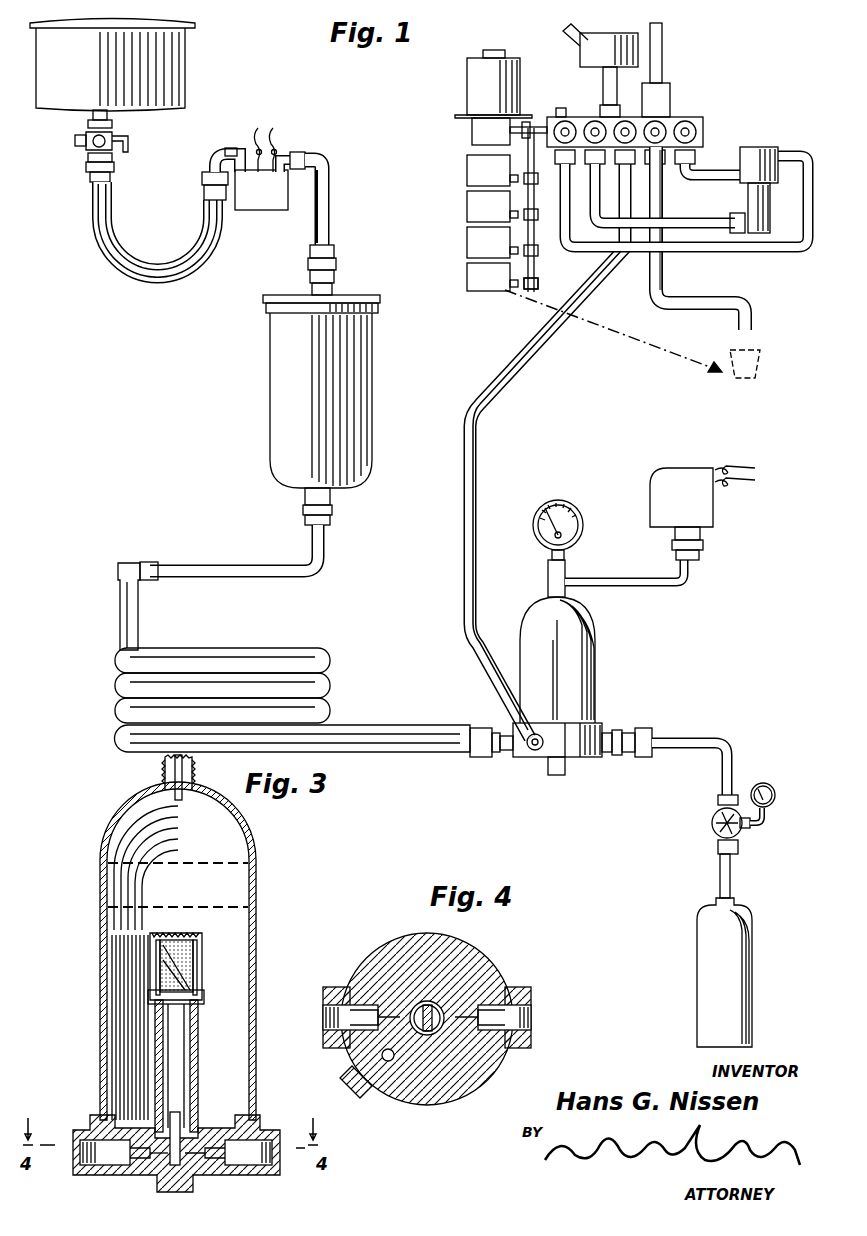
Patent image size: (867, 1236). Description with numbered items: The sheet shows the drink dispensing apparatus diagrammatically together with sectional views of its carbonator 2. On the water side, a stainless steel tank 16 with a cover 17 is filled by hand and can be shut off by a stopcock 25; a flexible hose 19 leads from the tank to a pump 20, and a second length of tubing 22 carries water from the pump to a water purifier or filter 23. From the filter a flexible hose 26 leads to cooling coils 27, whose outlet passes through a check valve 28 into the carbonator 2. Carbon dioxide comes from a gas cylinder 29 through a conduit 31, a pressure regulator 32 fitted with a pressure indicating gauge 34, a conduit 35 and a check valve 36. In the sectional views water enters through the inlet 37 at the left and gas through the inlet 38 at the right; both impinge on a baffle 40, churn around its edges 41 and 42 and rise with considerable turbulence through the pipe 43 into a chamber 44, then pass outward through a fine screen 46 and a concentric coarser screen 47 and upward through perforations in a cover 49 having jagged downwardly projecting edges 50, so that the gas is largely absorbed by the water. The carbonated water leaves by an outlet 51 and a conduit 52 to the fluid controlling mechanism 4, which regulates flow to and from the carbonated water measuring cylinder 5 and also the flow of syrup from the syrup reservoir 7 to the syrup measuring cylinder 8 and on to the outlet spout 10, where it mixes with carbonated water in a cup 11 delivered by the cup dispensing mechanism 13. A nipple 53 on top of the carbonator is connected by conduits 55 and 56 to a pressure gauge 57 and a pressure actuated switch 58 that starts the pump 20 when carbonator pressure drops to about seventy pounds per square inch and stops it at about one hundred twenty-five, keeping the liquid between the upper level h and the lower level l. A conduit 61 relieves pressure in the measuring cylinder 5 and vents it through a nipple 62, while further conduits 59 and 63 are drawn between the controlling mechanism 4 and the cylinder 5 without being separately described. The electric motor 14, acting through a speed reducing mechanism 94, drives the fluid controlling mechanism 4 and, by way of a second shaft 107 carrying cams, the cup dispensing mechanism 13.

In FIG. 1, the receiver or carbonator 2 is at (588, 672).
In FIG. 1, the fluid controlling mechanism 4 is at (680, 117).
In FIG. 1, the measuring cylinder 5 is at (762, 148).
In FIG. 1, the syrup reservoir 7 is at (585, 62).
In FIG. 1, the syrup measuring cylinder 8 is at (665, 80).
In FIG. 1, the outlet spout 10 is at (752, 312).
In FIG. 1, the cup or vessel 11 is at (760, 364).
In FIG. 1, the cup dispensing mechanism 13 is at (462, 212).
In FIG. 1, the electric motor 14 is at (467, 86).
In FIG. 1, the stainless steel tank 16 is at (180, 78).
In FIG. 1, the cover 17 is at (190, 21).
In FIG. 1, the flexible hose 19 is at (125, 272).
In FIG. 1, the pump 20 is at (245, 212).
In FIG. 1, the second hose or length of tubing 22 is at (330, 219).
In FIG. 1, the water purifier or filter 23 is at (290, 363).
In FIG. 1, the stopcock 25 is at (130, 147).
In FIG. 1, the tubing or flexible hose 26 is at (258, 578).
In FIG. 1, the cooling coils 27 is at (296, 663).
In FIG. 1, the check valve 28 is at (487, 760).
In FIG. 1, the gas cylinder 29 is at (740, 972).
In FIG. 1, the conduit 31 is at (732, 870).
In FIG. 1, the pressure regulator 32 is at (712, 820).
In FIG. 1, the pressure indicating gauge 34 is at (777, 796).
In FIG. 1, the conduit 35 is at (705, 738).
In FIG. 1, the check valve 36 is at (625, 728).
In FIG. 3, the water inlet 37 is at (72, 1140).
In FIG. 4, the water inlet 37 is at (325, 1022).
In FIG. 3, the gas inlet 38 is at (280, 1170).
In FIG. 4, the gas inlet 38 is at (531, 1030).
In FIG. 3, the baffle 40 is at (182, 1122).
In FIG. 4, the baffle 40 is at (437, 1028).
In FIG. 4, the baffle edge 41 is at (440, 1004).
In FIG. 4, the baffle edge 42 is at (427, 1019).
In FIG. 3, the pipe or conduit 43 is at (198, 1050).
In FIG. 3, the chamber 44 is at (205, 990).
In FIG. 3, the fine screen 46 is at (195, 960).
In FIG. 3, the coarser screen 47 is at (200, 976).
In FIG. 3, the cover 49 is at (200, 936).
In FIG. 3, the jagged edges 50 is at (160, 955).
In FIG. 1, the outlet 51 is at (535, 752).
In FIG. 4, the outlet 51 is at (357, 1097).
In FIG. 1, the conduit 52 is at (462, 503).
In FIG. 3, the nipple 53 is at (165, 770).
In FIG. 1, the conduit 55 is at (548, 584).
In FIG. 1, the conduit 56 is at (651, 586).
In FIG. 1, the pressure gauge 57 is at (568, 505).
In FIG. 1, the pressure actuated switch 58 is at (700, 518).
In FIG. 1, the pipe 59 is at (715, 170).
In FIG. 1, the conduit 61 is at (710, 252).
In FIG. 1, the nipple 62 is at (560, 108).
In FIG. 1, the pipe 63 is at (698, 220).
In FIG. 1, the speed reducing mechanism 94 is at (472, 132).
In FIG. 1, the second shaft 107 is at (540, 279).
In FIG. 3, the upper liquid level h is at (250, 860).
In FIG. 3, the lower liquid level l is at (248, 905).